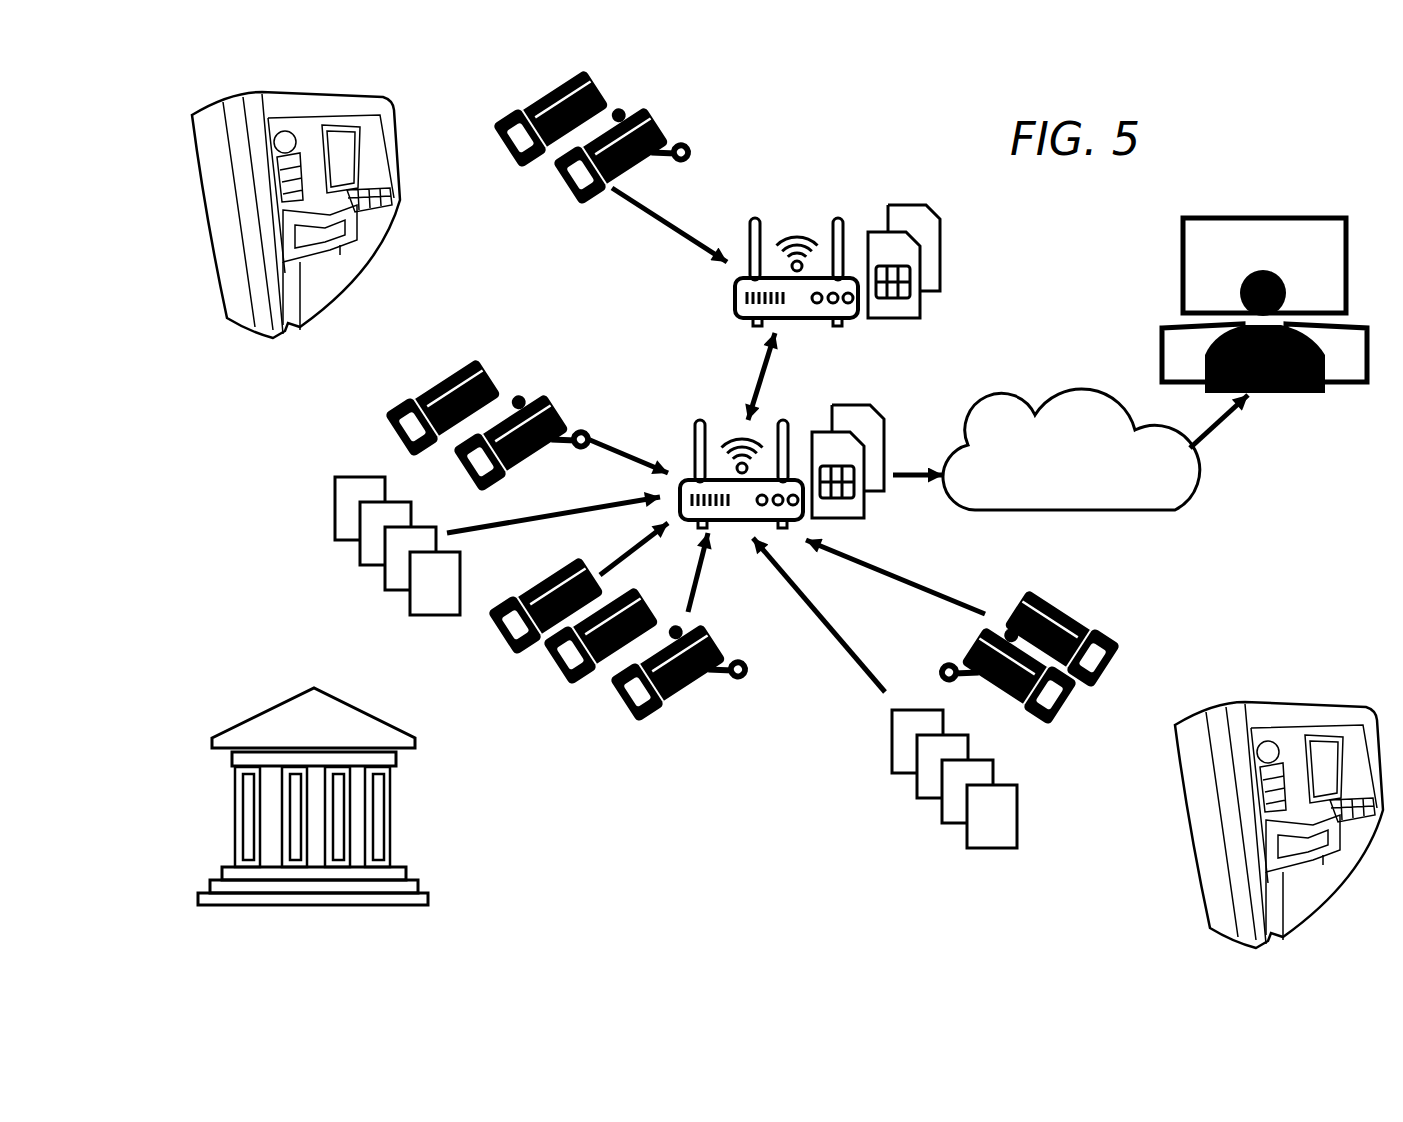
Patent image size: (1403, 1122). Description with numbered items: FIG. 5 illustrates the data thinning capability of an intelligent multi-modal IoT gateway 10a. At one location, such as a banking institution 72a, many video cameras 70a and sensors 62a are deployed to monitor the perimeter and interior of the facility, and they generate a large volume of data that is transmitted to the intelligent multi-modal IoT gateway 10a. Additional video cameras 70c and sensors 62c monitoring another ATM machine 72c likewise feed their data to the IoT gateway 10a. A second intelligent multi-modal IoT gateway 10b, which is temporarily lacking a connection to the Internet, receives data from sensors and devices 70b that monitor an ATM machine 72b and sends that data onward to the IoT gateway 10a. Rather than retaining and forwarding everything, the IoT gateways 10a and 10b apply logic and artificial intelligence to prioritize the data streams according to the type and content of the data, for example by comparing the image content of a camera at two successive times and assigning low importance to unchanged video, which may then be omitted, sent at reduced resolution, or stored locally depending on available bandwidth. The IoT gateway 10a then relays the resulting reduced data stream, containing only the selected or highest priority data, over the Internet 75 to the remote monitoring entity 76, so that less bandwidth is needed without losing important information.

The intelligent multi-modal IoT gateway 10a is at (690, 448).
The second intelligent multi-modal IoT gateway 10b is at (843, 212).
The sensors 62a is at (323, 540).
The sensors 62c is at (885, 802).
The video cameras 70a is at (523, 368).
The sensors and devices 70b is at (495, 103).
The video cameras 70c is at (1103, 615).
The banking institution 72a is at (264, 716).
The ATM machine 72b is at (195, 128).
The ATM machine 72c is at (1172, 775).
The Internet 75 is at (1089, 474).
The monitoring entity 76 is at (1297, 218).